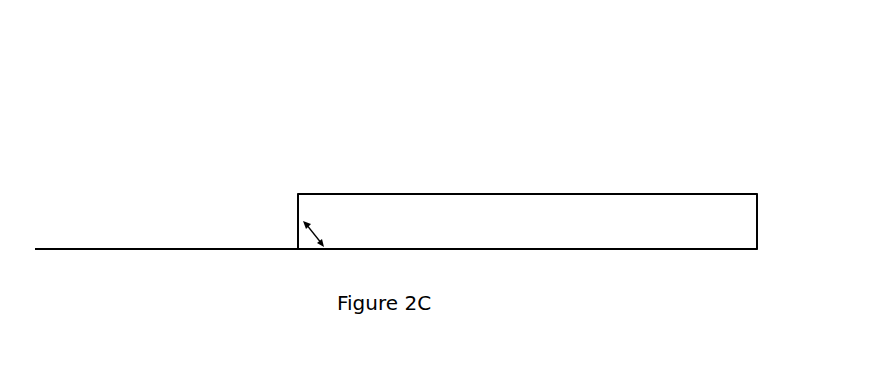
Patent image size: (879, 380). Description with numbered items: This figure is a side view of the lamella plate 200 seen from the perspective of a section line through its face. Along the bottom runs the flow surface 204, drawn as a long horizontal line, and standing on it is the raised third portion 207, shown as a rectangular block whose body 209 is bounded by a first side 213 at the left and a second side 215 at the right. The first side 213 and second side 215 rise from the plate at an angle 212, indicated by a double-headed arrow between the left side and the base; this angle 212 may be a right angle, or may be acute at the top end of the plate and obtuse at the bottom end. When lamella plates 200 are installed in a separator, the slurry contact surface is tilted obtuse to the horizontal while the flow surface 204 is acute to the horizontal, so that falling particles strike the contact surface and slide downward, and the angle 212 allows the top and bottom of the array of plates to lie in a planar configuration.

The device assembly 200 is at (148, 161).
The flow surface 204 is at (264, 262).
The third portion 207 is at (393, 194).
The layer body 209 is at (553, 193).
The angle 212 is at (314, 233).
The first side 213 is at (297, 200).
The second side 215 is at (758, 231).